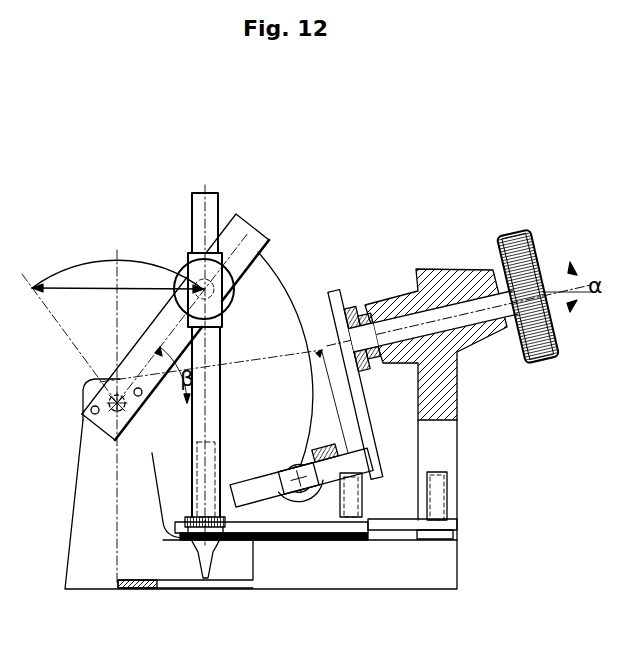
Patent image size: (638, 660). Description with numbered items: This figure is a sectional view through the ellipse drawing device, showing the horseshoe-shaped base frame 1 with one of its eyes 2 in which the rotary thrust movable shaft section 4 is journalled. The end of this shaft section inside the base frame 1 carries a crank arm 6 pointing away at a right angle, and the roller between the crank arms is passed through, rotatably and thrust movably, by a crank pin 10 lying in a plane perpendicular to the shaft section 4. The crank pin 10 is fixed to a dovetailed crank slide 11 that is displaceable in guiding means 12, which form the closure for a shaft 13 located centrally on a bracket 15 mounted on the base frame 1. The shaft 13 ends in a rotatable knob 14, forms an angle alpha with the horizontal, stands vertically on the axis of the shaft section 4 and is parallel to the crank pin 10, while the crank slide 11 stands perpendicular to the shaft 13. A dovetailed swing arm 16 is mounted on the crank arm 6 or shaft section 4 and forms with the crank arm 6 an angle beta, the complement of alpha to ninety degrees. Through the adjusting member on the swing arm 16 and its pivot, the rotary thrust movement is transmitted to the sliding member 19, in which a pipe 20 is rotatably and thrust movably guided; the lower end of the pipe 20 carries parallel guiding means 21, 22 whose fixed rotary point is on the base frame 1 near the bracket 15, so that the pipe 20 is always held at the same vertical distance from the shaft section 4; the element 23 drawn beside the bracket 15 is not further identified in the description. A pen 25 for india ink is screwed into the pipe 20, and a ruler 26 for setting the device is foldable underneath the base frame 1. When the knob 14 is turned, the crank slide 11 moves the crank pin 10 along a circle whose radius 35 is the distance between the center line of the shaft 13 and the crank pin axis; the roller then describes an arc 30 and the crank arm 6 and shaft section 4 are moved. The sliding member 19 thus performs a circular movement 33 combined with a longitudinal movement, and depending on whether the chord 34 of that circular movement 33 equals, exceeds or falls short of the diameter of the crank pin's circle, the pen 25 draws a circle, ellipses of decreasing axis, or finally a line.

The base frame 1 is at (78, 547).
The eye 2 is at (78, 502).
The shaft section 4 is at (80, 424).
The crank arm 6 is at (143, 432).
The crank pin 10 is at (272, 493).
The crank slide 11 is at (357, 387).
The guiding means 12 is at (347, 312).
The shaft 13 is at (470, 300).
The knob 14 is at (527, 237).
The bracket 15 is at (450, 397).
The swing arm 16 is at (250, 228).
The sliding member 19 is at (227, 322).
The pipe 20 is at (190, 210).
The parallel guiding means 21 is at (310, 534).
The parallel guiding means 22 is at (392, 524).
The guide pin 23 is at (440, 492).
The pen 25 is at (200, 548).
The ruler 26 is at (140, 587).
The arc 30 is at (283, 297).
The circular movement 33 is at (85, 258).
The chord 34 is at (72, 292).
The radius 35 is at (332, 402).